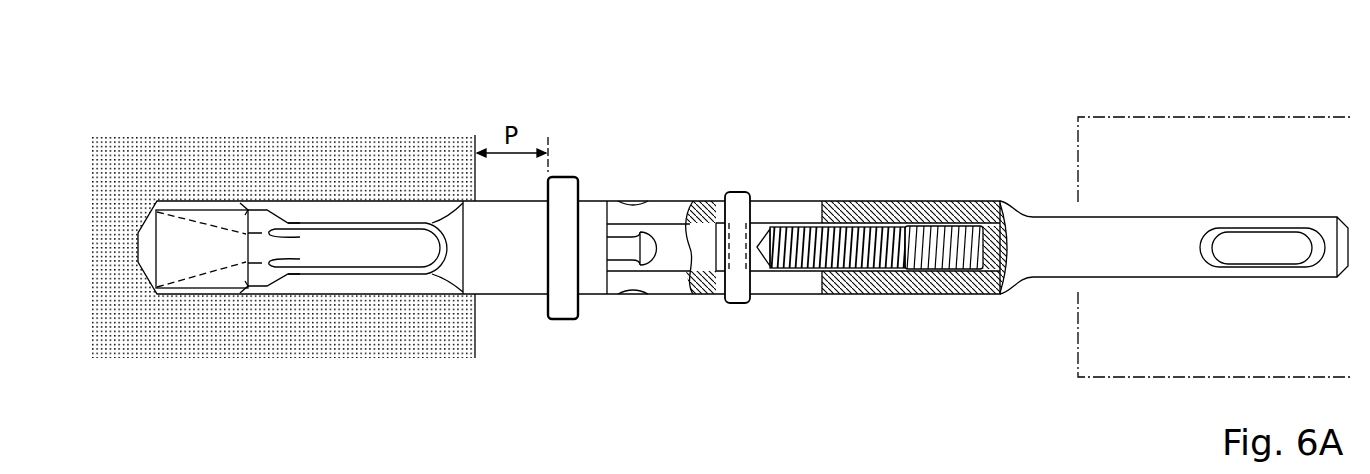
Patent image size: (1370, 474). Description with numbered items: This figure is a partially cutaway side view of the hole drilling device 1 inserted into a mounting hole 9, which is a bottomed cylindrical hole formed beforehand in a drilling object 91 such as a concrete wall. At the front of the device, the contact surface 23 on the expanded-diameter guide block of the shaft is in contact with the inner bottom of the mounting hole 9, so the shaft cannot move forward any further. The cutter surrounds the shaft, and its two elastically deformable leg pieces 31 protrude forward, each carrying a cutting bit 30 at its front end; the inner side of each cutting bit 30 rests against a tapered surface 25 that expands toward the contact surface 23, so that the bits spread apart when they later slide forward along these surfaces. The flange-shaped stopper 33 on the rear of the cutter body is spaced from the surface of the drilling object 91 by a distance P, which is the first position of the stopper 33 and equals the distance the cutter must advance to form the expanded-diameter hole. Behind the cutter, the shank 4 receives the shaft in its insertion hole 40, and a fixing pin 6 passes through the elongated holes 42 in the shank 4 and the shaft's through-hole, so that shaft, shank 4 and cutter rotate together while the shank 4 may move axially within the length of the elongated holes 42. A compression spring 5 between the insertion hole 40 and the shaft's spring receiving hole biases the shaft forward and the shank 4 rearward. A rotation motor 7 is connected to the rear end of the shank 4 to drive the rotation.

The hole drilling device 1 is at (957, 102).
The shank 4 is at (890, 203).
The compression spring 5 is at (918, 295).
The fixing pin 6 is at (733, 303).
The rotation motor 7 is at (1186, 127).
The mounting hole 9 is at (315, 201).
The contact surface 23 is at (137, 247).
The tapered surface 25 is at (198, 206).
The cutting bit 30 is at (246, 205).
The leg piece 31 is at (372, 213).
The stopper 33 is at (563, 192).
The insertion hole 40 is at (703, 203).
The elongated hole 42 is at (807, 203).
The drilling object 91 is at (477, 328).